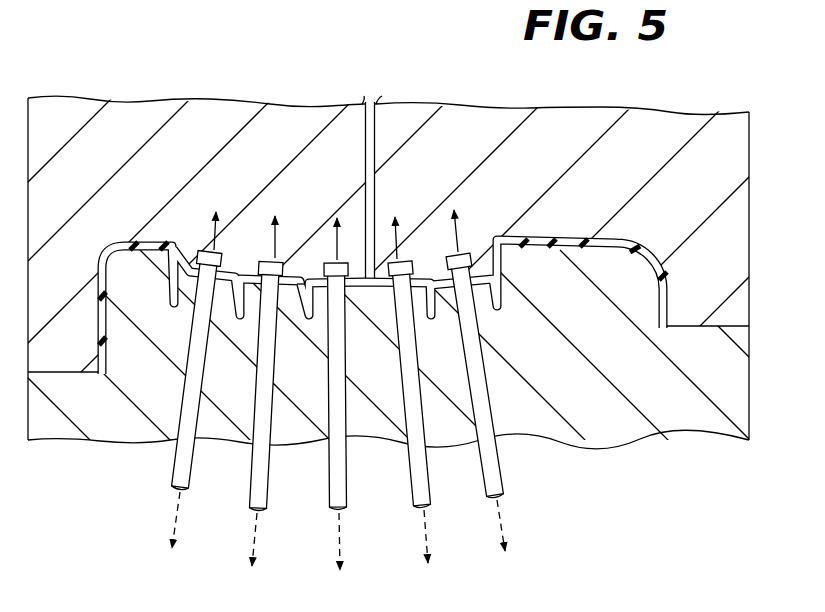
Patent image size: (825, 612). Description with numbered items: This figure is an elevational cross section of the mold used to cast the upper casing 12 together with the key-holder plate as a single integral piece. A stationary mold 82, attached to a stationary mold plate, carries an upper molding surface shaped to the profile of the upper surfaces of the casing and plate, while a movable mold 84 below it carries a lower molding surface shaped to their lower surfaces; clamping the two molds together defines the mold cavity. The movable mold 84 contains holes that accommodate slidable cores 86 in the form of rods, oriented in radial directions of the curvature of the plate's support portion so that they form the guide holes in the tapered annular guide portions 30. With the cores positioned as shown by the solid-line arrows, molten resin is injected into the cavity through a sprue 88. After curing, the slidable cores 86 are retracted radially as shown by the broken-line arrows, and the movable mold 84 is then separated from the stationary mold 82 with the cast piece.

The upper casing 12 is at (560, 234).
The annular guide portions 30 is at (412, 282).
The stationary mold 82 is at (742, 131).
The movable mold 84 is at (735, 393).
The slidable cores 86 is at (182, 465).
The sprue 88 is at (377, 103).